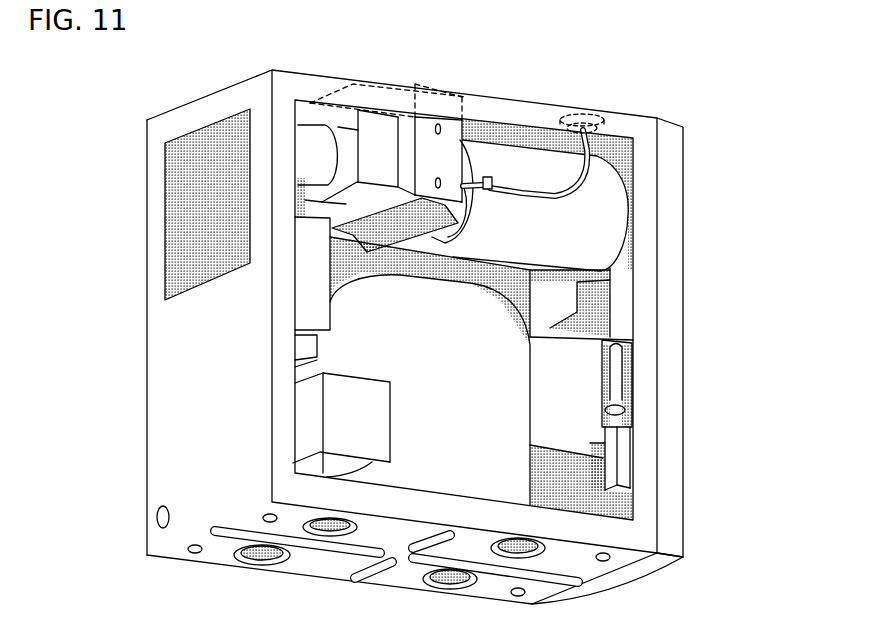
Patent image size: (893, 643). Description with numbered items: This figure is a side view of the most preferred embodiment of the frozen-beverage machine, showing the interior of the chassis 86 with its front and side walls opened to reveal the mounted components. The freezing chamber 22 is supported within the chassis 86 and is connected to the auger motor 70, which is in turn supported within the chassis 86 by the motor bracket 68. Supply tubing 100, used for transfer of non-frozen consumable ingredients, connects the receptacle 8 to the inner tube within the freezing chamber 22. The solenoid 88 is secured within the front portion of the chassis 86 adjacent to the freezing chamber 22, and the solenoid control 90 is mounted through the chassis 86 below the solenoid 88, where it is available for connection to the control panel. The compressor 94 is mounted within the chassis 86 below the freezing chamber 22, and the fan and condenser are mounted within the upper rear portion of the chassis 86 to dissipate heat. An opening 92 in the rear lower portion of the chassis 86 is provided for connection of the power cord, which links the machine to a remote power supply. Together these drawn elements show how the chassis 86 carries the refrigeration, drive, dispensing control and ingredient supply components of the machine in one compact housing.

The receptacle 8 is at (597, 112).
The freezing chamber 22 is at (603, 225).
The motor bracket 68 is at (450, 130).
The auger motor 70 is at (313, 143).
The chassis 86 is at (157, 152).
The solenoid 88 is at (622, 310).
The solenoid control 90 is at (622, 453).
The opening 92 is at (157, 517).
The compressor 94 is at (503, 482).
The supply tubing 100 is at (583, 177).